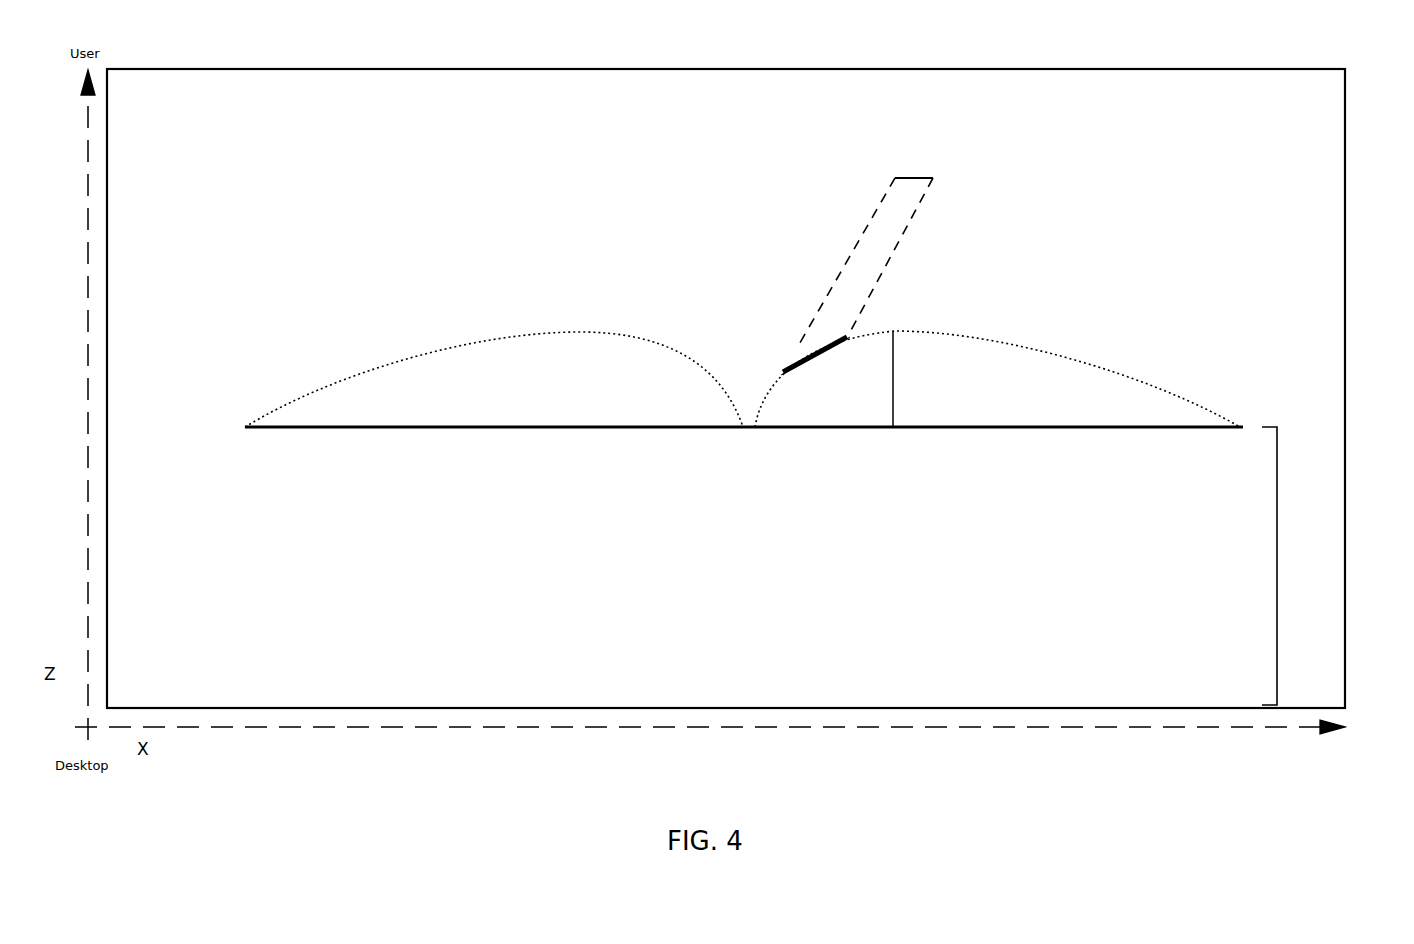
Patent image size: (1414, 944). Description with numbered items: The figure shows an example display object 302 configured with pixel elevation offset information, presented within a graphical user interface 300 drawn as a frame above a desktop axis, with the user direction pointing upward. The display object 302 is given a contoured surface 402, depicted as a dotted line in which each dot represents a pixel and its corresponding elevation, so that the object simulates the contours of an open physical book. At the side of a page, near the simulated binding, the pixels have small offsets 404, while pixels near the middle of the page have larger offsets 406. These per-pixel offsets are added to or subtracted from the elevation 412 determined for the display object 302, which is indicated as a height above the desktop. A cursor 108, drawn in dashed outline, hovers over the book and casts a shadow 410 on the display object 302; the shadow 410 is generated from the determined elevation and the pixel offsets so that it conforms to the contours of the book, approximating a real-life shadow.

The graphical user interface 300 is at (1347, 128).
The display object 302 is at (855, 428).
The cursor 108 is at (920, 178).
The contoured surface 402 is at (998, 340).
The small offsets 404 is at (738, 412).
The larger offsets 406 is at (915, 350).
The shadow 410 is at (802, 350).
The elevation 412 is at (1277, 535).